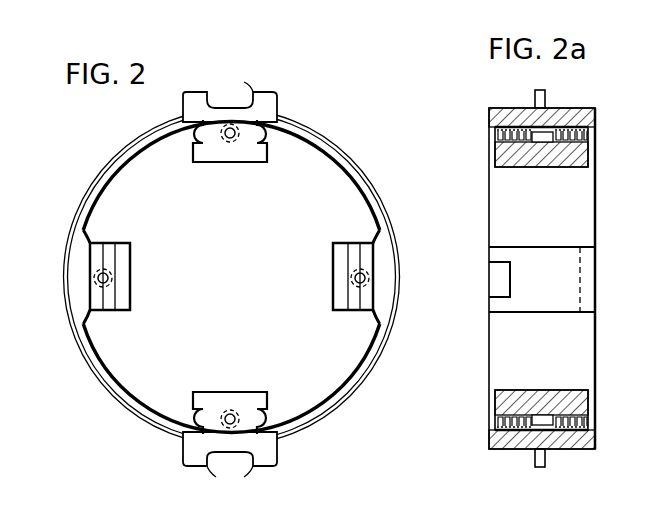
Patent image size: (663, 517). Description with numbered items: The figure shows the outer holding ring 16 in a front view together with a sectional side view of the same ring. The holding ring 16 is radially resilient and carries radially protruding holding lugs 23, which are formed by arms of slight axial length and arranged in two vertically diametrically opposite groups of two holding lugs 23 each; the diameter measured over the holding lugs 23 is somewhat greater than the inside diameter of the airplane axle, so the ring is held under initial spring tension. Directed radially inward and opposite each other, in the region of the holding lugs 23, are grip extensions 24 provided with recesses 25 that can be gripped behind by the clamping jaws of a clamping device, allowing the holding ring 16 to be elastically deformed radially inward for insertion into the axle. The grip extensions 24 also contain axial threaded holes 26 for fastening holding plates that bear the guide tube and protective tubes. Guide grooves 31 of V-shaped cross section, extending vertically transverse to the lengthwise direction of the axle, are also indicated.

In FIG. 2, the holding ring 16 is at (112, 425).
In FIG. 2A, the holding ring 16 is at (482, 388).
In FIG. 2, the holding lugs 23 is at (205, 97).
In FIG. 2A, the holding lugs 23 is at (547, 98).
In FIG. 2, the grip extensions 24 is at (207, 264).
In FIG. 2, the recesses 25 is at (197, 137).
In FIG. 2, the axial threaded holes 26 is at (240, 418).
In FIG. 2A, the axial threaded holes 26 is at (503, 128).
In FIG. 2, the guide grooves 31 is at (91, 300).